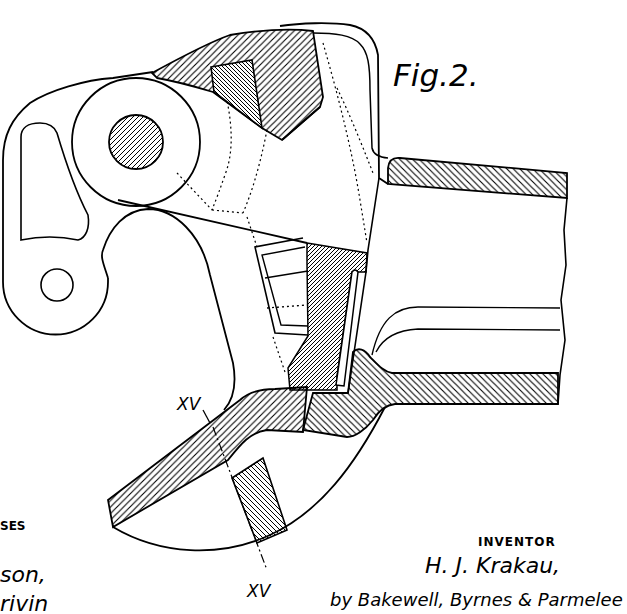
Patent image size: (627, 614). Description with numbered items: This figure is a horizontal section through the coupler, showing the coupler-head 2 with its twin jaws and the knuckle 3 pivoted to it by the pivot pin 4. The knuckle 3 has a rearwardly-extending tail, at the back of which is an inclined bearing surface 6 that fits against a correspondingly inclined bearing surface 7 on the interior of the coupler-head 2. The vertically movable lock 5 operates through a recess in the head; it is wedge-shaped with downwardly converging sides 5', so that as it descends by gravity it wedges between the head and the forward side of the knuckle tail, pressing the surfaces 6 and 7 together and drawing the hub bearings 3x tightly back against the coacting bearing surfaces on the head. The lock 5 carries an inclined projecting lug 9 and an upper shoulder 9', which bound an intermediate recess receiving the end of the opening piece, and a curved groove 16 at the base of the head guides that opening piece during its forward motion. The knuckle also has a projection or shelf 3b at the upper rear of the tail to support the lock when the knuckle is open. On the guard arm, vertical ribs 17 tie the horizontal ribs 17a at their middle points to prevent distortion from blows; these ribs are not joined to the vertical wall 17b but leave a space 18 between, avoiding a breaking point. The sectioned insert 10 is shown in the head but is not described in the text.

The coupler-head 2 is at (234, 251).
The knuckle 3 is at (142, 203).
The hub bearings 3x is at (73, 170).
The projection or shelf 3b is at (367, 122).
The pivot pin 4 is at (140, 157).
The lock 5 is at (360, 328).
The downwardly converging sides 5' is at (428, 403).
The inclined bearing surface 6 is at (283, 140).
The inclined bearing surface 7 is at (321, 107).
The inclined projecting lug 9 is at (281, 286).
The upper shoulder 9' is at (285, 286).
The wear insert 10 is at (232, 63).
The curved groove 16 is at (250, 165).
The vertical ribs 17 is at (282, 533).
The horizontal ribs 17a is at (327, 471).
The vertical wall 17b is at (200, 442).
The space 18 is at (259, 500).